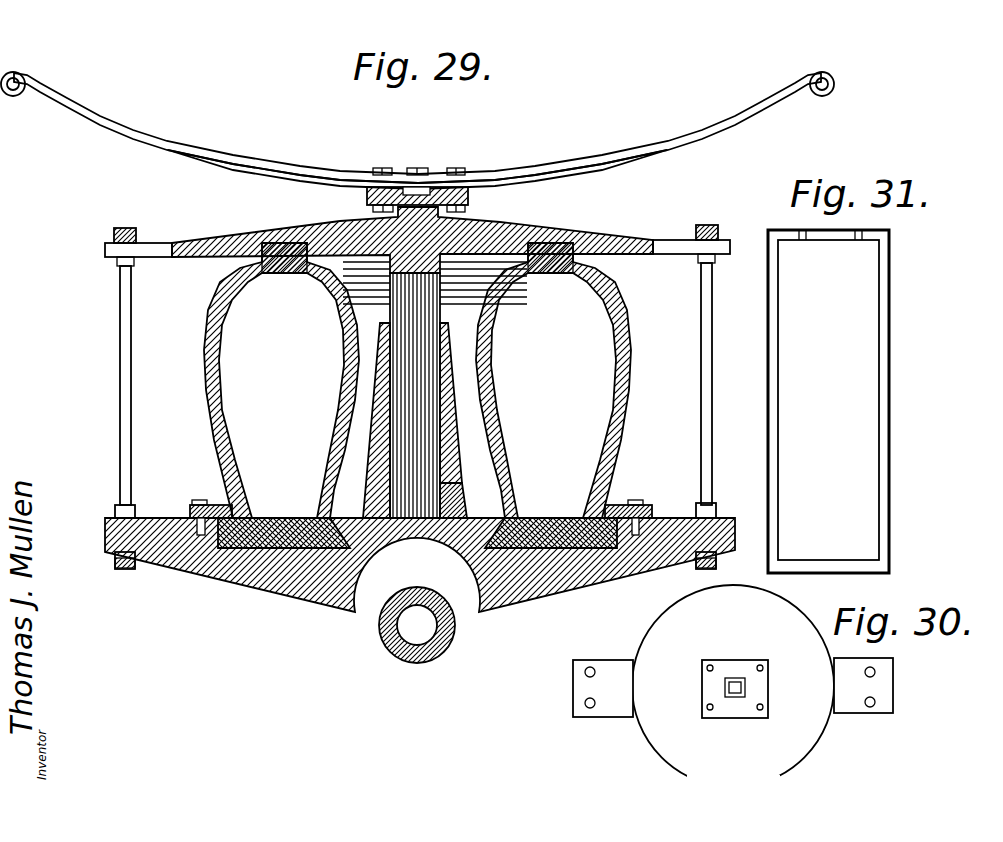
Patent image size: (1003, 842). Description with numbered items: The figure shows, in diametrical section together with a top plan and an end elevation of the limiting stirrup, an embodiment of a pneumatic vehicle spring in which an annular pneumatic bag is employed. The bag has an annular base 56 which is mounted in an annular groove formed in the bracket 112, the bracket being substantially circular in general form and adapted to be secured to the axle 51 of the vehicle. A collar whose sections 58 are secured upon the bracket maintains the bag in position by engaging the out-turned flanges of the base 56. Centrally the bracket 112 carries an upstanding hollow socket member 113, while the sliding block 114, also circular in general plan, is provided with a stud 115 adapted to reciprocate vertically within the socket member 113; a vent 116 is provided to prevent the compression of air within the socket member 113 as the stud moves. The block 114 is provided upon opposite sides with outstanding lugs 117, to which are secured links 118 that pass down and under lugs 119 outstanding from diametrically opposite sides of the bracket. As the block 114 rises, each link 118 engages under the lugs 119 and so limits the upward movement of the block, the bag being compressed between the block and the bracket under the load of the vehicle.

In FIG. 29, the sliding block 114 is at (492, 232).
In FIG. 30, the sliding block 114 is at (733, 692).
In FIG. 29, the lugs 117 is at (106, 250).
In FIG. 30, the lugs 117 is at (583, 688).
In FIG. 29, the links 118 is at (131, 352).
In FIG. 31, the links 118 is at (883, 320).
In FIG. 29, the lugs 119 is at (105, 533).
In FIG. 29, the bracket 112 is at (322, 592).
In FIG. 29, the axle 51 is at (385, 655).
In FIG. 29, the base 56 is at (290, 552).
In FIG. 29, the collar section 58 is at (182, 512).
In FIG. 29, the stud 115 is at (497, 307).
In FIG. 29, the socket member 113 is at (463, 435).
In FIG. 29, the vent 116 is at (457, 491).